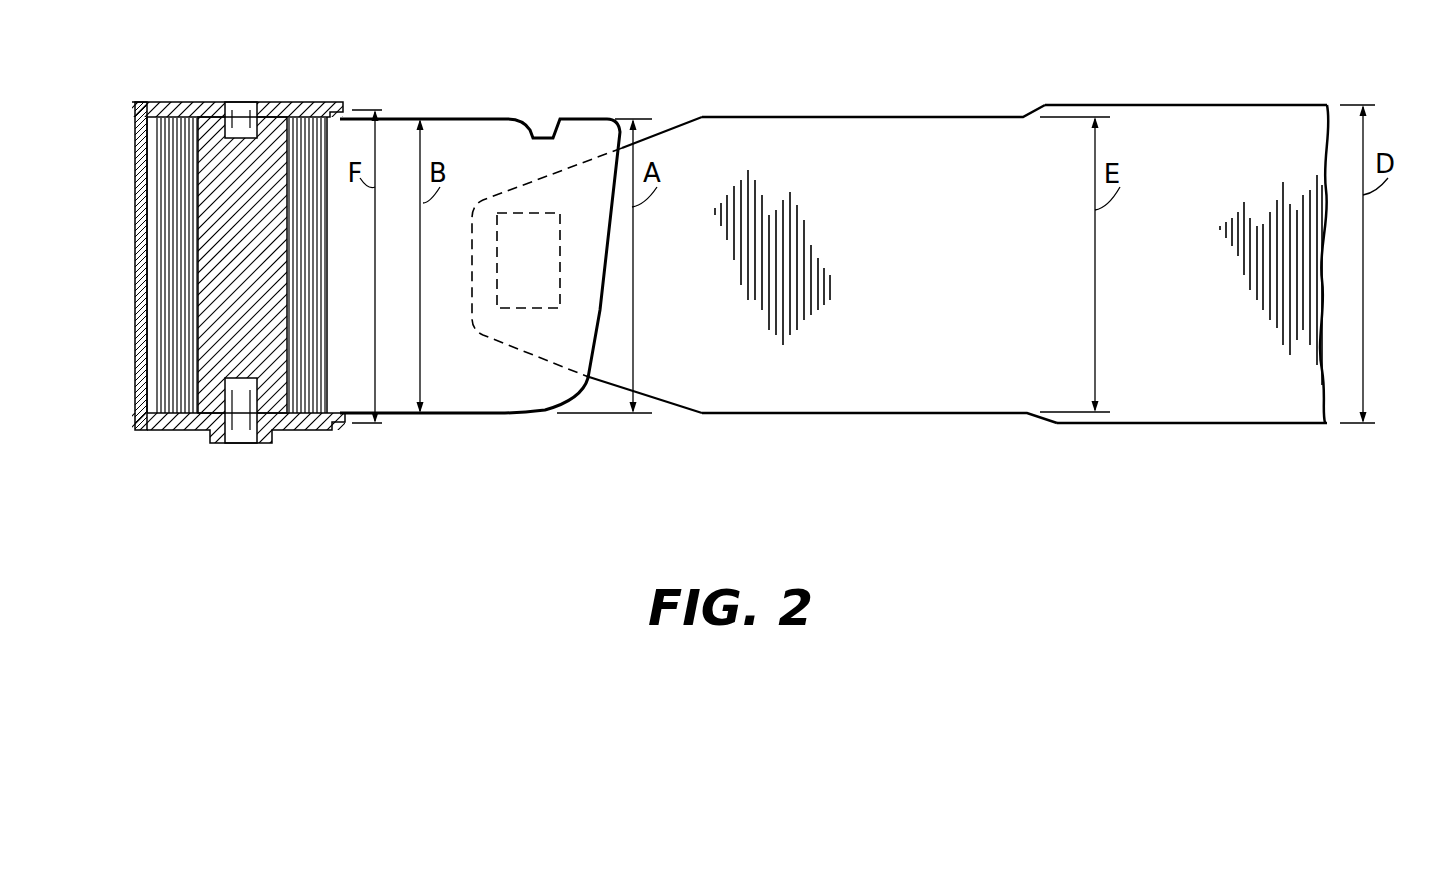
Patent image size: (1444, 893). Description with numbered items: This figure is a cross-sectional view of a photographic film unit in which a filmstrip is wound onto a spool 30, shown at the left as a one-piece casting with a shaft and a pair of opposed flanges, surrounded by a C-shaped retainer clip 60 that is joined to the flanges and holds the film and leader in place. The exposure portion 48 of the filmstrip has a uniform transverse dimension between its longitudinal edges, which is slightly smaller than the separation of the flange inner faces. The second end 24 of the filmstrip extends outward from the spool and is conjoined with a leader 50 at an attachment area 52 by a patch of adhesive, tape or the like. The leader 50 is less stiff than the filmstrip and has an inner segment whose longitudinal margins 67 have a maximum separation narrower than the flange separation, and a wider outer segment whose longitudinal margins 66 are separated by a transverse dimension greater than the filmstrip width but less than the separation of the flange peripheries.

The second end 24 is at (567, 415).
The spool 30 is at (227, 167).
The exposure portion 48 is at (355, 385).
The leader 50 is at (950, 347).
The attachment area 52 is at (560, 250).
The retainer clip 60 is at (135, 148).
The longitudinal margins 66 is at (1222, 425).
The longitudinal margins 67 is at (877, 413).